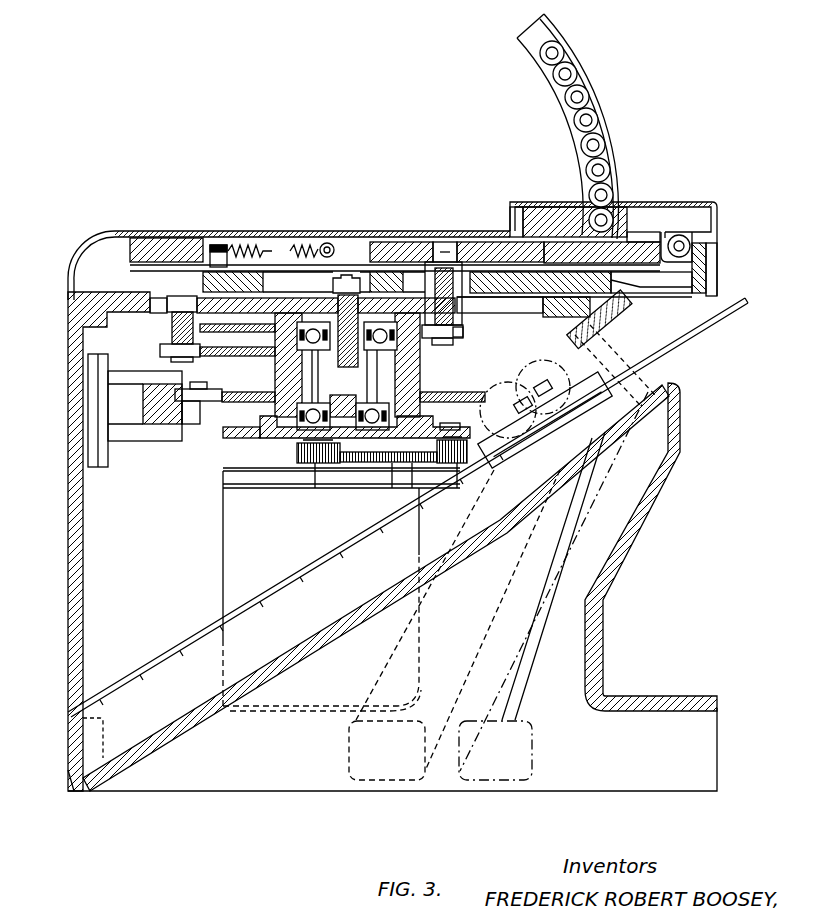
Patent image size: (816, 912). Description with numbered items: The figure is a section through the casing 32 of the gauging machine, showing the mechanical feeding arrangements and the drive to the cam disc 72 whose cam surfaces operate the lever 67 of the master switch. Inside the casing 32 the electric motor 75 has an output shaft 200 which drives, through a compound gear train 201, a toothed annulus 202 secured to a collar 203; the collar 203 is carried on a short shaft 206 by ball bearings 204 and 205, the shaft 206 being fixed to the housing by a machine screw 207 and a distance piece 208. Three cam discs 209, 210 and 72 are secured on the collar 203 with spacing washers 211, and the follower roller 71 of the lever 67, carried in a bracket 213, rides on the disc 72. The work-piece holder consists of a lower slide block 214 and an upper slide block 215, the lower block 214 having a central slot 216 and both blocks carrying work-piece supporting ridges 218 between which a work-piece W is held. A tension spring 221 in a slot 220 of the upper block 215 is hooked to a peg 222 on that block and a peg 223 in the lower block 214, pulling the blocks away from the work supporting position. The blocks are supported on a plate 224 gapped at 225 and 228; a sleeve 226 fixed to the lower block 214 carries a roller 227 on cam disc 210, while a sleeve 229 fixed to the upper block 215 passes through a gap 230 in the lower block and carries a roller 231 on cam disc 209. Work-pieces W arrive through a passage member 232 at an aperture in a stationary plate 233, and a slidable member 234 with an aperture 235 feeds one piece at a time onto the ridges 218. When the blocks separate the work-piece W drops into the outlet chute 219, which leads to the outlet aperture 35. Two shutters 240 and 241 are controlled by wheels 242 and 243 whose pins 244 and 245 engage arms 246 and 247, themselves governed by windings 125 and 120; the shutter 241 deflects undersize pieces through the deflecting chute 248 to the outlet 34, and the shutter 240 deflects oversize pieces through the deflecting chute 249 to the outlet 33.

The casing 32 is at (392, 541).
The outlet aperture 33 is at (365, 771).
The outlet 34 is at (500, 772).
The outlet aperture 35 is at (66, 760).
The lever 67 is at (143, 407).
The follower roller 71 is at (182, 415).
The disc 72 is at (233, 402).
The electric motor 75 is at (222, 533).
The energising winding 120 is at (536, 372).
The winding 125 is at (484, 400).
The output shaft 200 is at (303, 445).
The compound gear train 201 is at (315, 463).
The toothed annulus 202 is at (415, 452).
The collar 203 is at (247, 432).
The ball bearing 204 is at (420, 341).
The ball bearing 205 is at (322, 490).
The short shaft 206 is at (370, 355).
The machine screw 207 is at (344, 277).
The distance piece 208 is at (319, 296).
The cam disc 209 is at (212, 326).
The cam disc 210 is at (222, 347).
The spacing washers 211 is at (277, 372).
The bracket 213 is at (110, 450).
The lower slide block 214 is at (707, 271).
The upper slide block 215 is at (631, 250).
The central slot 216 is at (691, 247).
The work-piece supporting ridges 218 is at (680, 232).
The outlet chute 219 is at (713, 299).
The slot 220 is at (217, 243).
The tension spring 221 is at (250, 248).
The peg 222 is at (328, 244).
The peg 223 is at (213, 257).
The plate 224 is at (96, 292).
The gap 225 is at (161, 314).
The sleeve 226 is at (166, 334).
The roller 227 is at (195, 361).
The gap 228 is at (500, 305).
The sleeve 229 is at (455, 267).
The gap 230 is at (412, 273).
The roller 231 is at (464, 331).
The passage member 232 is at (600, 100).
The stationary plate 233 is at (632, 200).
The slidable member 234 is at (533, 204).
The aperture 235 is at (567, 207).
The shutter 240 is at (590, 444).
The shutter 241 is at (668, 411).
The wheel 242 is at (448, 485).
The wheel 243 is at (597, 324).
The pin 244 is at (512, 440).
The pin 245 is at (590, 405).
The arm 246 is at (512, 400).
The arm 247 is at (543, 385).
The deflecting chute 248 is at (576, 622).
The deflecting chute 249 is at (419, 655).
The work-piece W is at (682, 222).